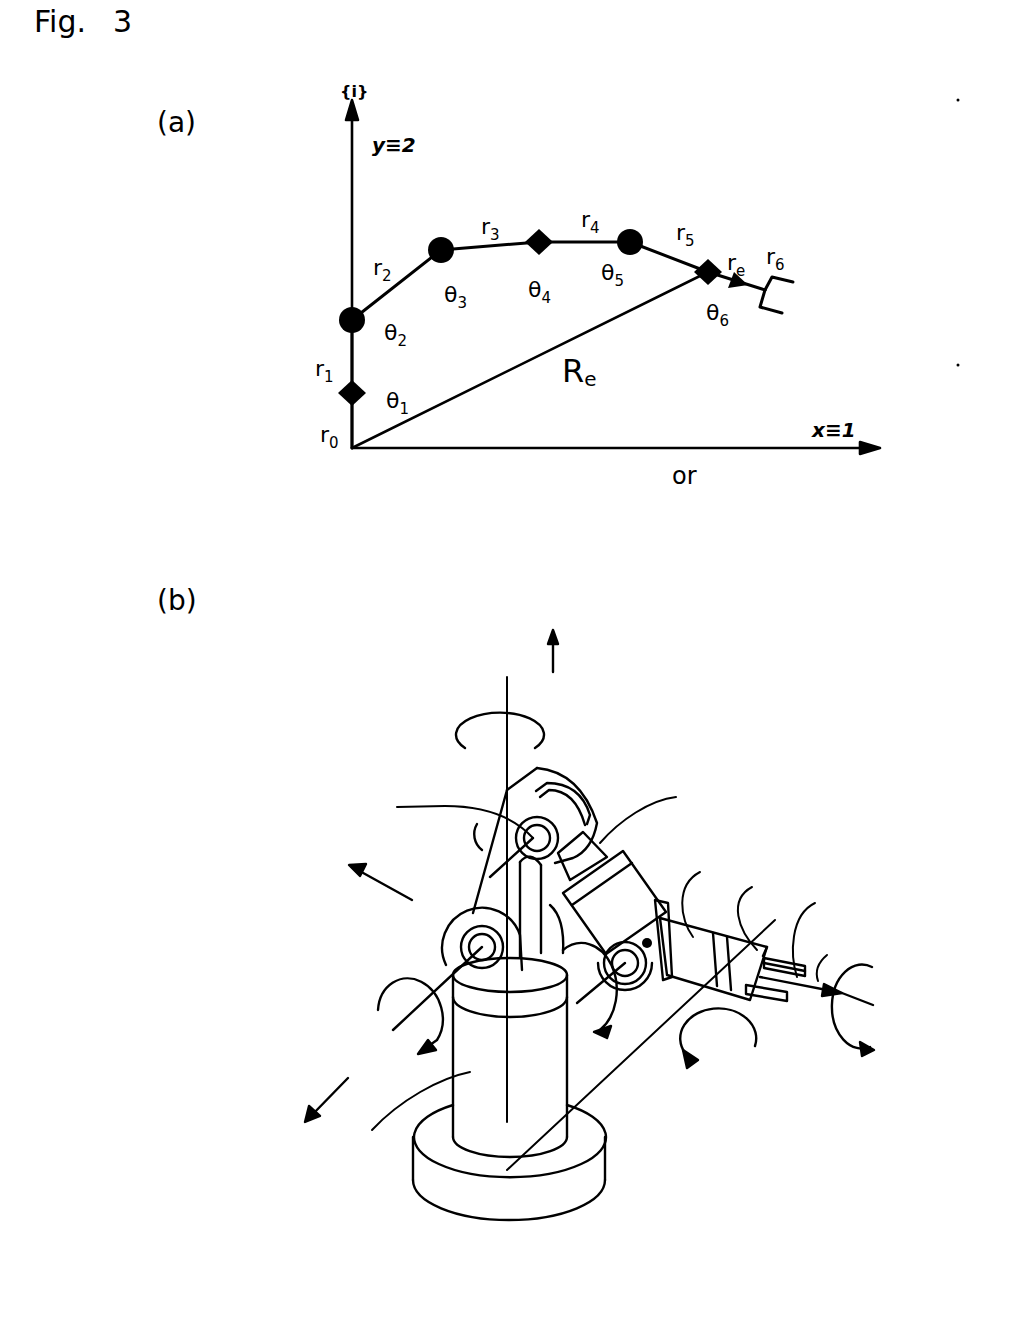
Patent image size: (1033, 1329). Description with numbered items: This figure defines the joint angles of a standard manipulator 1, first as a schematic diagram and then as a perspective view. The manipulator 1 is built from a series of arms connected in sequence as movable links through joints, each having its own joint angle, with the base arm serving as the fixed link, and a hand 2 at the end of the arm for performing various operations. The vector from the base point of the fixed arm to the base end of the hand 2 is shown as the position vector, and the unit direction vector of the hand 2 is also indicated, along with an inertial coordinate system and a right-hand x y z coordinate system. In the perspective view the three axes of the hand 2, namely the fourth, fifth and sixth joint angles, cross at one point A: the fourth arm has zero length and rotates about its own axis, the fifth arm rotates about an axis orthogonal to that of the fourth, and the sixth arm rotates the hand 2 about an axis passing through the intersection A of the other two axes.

The manipulator 1 is at (593, 134).
The hand 2 is at (793, 282).
The intersection point A is at (647, 943).